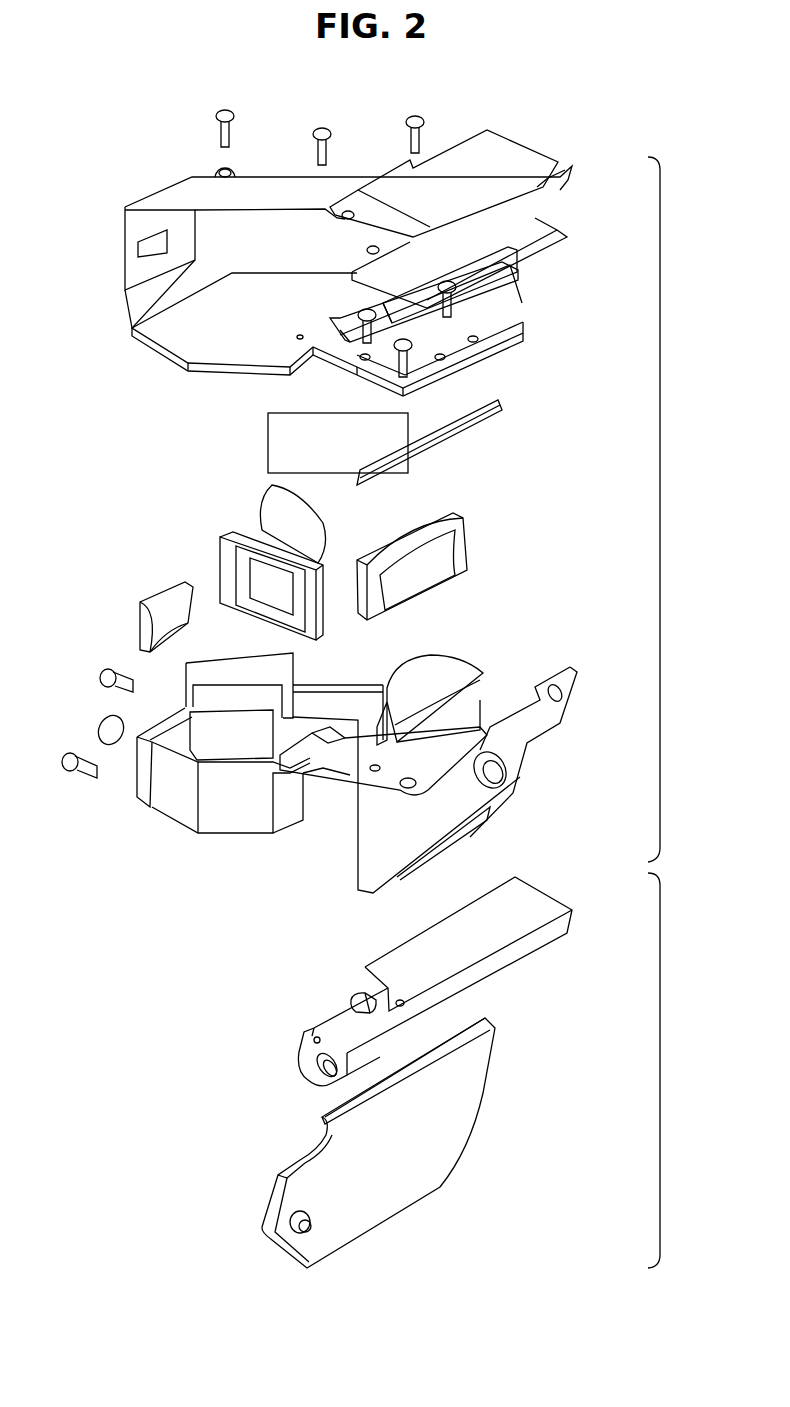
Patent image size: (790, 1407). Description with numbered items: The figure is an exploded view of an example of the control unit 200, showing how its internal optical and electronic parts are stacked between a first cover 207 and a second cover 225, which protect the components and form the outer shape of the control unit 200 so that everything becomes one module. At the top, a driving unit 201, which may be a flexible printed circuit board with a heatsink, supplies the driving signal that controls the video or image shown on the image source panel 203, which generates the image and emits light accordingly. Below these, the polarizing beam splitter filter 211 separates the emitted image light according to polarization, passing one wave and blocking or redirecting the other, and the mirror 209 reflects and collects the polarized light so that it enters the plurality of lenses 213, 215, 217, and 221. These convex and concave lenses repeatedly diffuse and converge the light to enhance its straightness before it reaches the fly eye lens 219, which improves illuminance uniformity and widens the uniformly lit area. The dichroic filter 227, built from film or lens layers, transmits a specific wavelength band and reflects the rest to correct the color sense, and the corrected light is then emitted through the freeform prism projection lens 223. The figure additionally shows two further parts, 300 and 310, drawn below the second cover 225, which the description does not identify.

The control unit 200 is at (660, 518).
The driving unit 201 is at (566, 170).
The image source panel 203 is at (512, 273).
The first cover 207 is at (132, 328).
The mirror 209 is at (268, 445).
The polarizing beam splitter filter (PBSF) 211 is at (473, 418).
The lens 213 is at (266, 512).
The lens 215 is at (140, 622).
The lens 217 is at (465, 542).
The fly eye lens (FEL) 219 is at (222, 563).
The lens 221 is at (98, 725).
The freeform prism projection lens (FPL) 223 is at (462, 657).
The second cover 225 is at (558, 712).
The dichroic filter 227 is at (233, 750).
The mounting plate 300 is at (476, 1095).
The mounting arm 310 is at (572, 912).